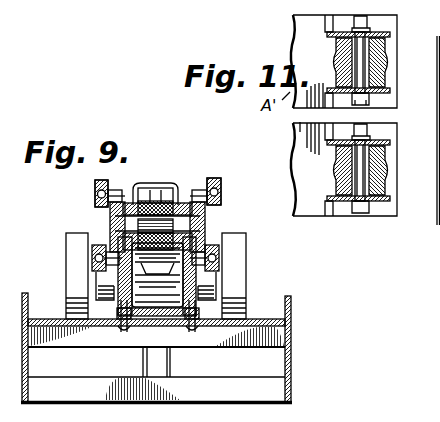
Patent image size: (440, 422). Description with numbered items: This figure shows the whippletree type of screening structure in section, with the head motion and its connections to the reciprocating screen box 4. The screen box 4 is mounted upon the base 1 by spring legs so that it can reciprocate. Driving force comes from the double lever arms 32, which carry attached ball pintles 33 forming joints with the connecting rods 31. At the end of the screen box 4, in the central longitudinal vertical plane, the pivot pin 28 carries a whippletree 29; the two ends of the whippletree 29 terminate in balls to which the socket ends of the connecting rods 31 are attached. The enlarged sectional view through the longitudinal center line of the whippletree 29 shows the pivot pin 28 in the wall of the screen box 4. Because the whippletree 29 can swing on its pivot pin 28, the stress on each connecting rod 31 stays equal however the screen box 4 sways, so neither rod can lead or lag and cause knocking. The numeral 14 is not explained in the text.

In FIG. 9, the base 1 is at (291, 336).
In FIG. 11, the screen box 4 is at (306, 132).
In FIG. 9, the hub cap 14 is at (150, 192).
In FIG. 11, the pivot pin 28 is at (364, 58).
In FIG. 11, the whippletree 29 is at (386, 74).
In FIG. 9, the connecting rod 31 is at (98, 246).
In FIG. 9, the double lever arm 32 is at (110, 210).
In FIG. 9, the ball pintle 33 is at (104, 195).